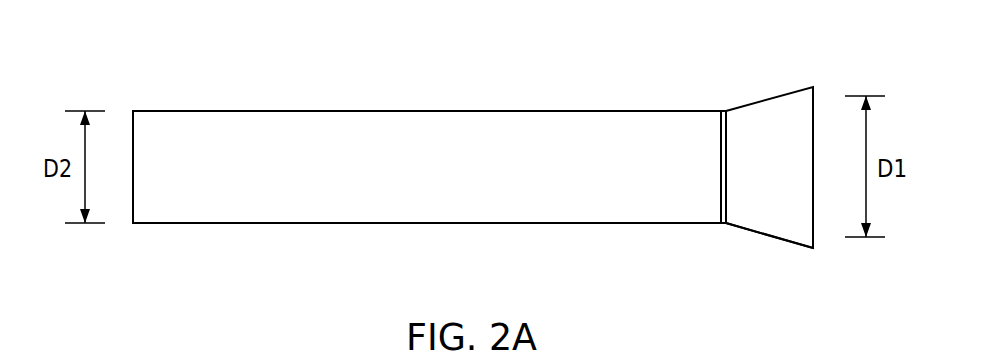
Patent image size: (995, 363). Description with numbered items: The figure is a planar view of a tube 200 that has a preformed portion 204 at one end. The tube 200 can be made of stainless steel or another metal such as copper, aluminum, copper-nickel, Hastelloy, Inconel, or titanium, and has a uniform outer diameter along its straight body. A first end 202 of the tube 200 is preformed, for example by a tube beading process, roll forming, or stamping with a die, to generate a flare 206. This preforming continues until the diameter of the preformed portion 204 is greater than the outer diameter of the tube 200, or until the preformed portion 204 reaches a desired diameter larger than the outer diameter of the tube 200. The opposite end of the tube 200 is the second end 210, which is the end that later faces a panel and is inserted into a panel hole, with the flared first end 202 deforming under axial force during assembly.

The tube 200 is at (475, 155).
The second end 210 is at (132, 167).
The preformed portion 204 is at (760, 95).
The first end 202 is at (815, 165).
The flare 206 is at (771, 216).